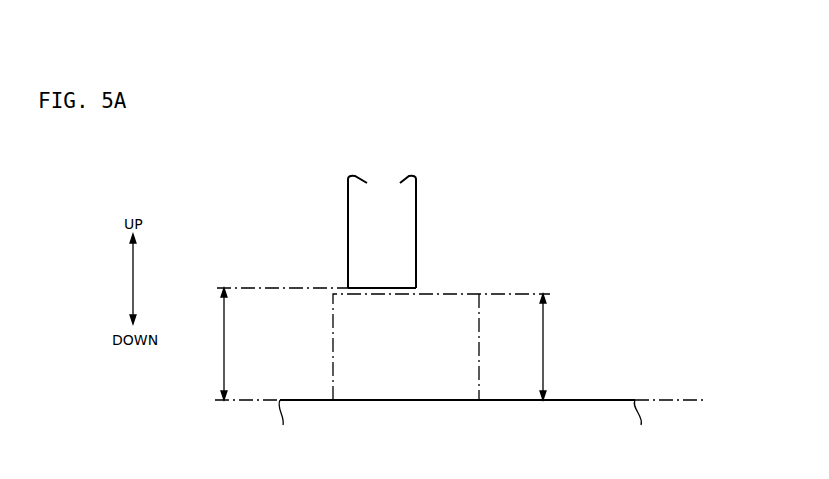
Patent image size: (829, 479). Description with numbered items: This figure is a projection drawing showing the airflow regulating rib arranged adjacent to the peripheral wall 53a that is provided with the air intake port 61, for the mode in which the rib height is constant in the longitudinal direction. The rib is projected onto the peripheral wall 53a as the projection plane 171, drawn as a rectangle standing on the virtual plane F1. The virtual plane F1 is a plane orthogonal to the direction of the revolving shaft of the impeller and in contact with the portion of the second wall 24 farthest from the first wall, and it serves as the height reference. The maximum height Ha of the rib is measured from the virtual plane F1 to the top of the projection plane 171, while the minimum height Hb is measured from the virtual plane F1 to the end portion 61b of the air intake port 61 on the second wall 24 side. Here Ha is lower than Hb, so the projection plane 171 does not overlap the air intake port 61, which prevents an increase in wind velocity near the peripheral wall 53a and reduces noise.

The air intake port 61 is at (416, 242).
The end portion of the air intake port 61b is at (367, 288).
The projection plane 171 is at (479, 310).
The peripheral wall 53a is at (310, 383).
The second wall 24 is at (600, 400).
The virtual plane F1 is at (692, 392).
The maximum height of the rib Ha is at (558, 347).
The minimum height of the end portion of the air intake port Hb is at (269, 344).